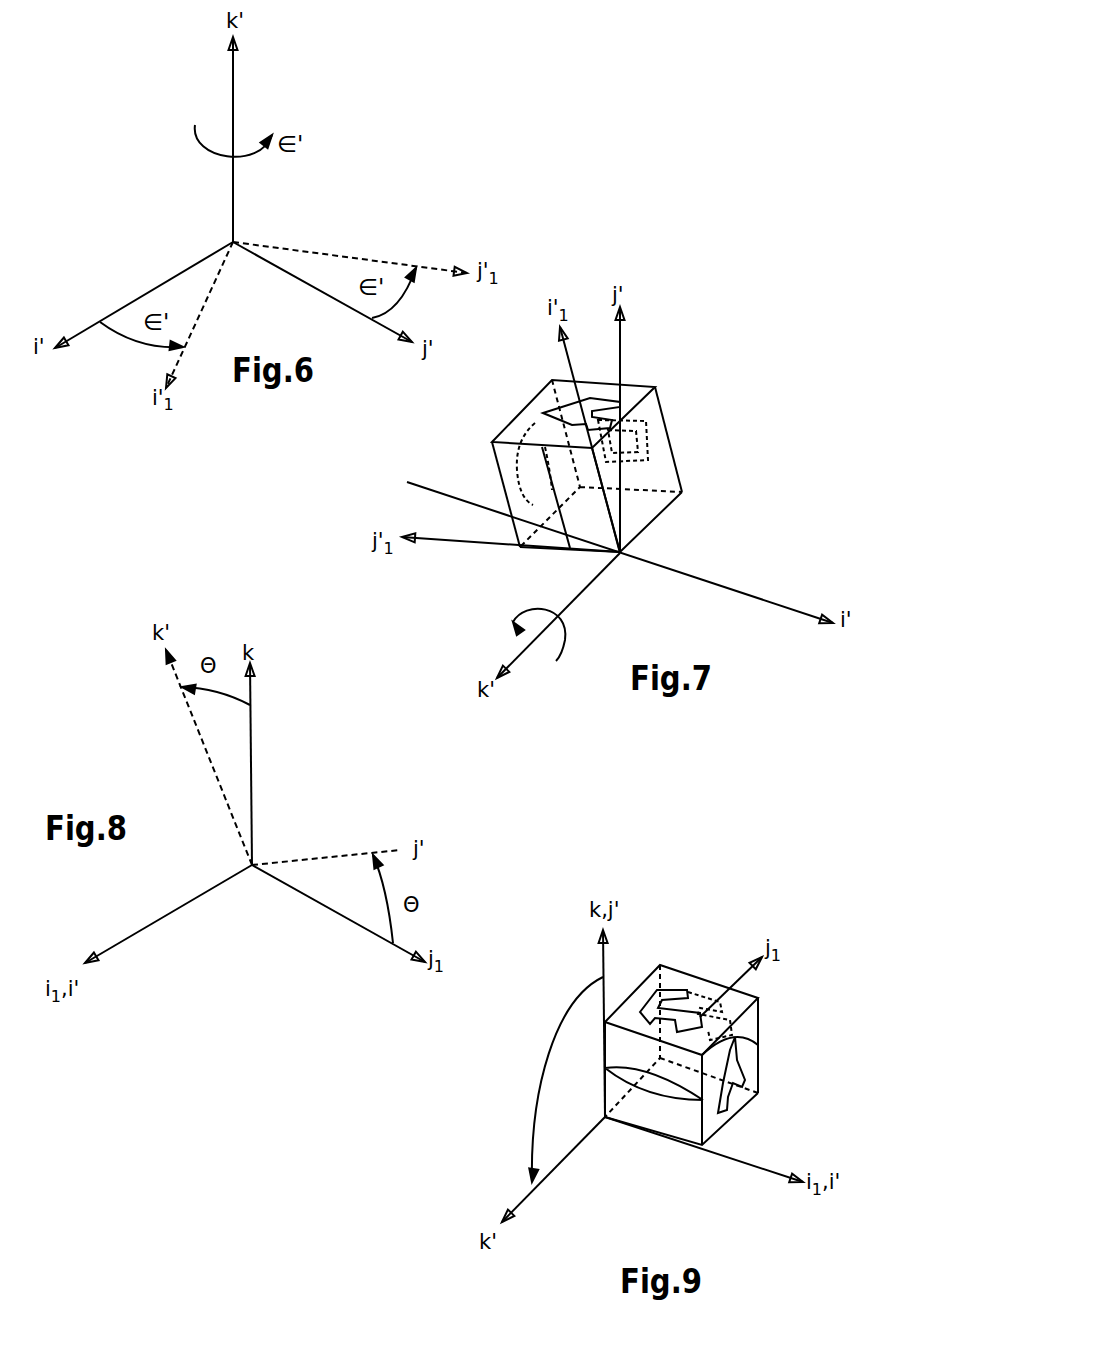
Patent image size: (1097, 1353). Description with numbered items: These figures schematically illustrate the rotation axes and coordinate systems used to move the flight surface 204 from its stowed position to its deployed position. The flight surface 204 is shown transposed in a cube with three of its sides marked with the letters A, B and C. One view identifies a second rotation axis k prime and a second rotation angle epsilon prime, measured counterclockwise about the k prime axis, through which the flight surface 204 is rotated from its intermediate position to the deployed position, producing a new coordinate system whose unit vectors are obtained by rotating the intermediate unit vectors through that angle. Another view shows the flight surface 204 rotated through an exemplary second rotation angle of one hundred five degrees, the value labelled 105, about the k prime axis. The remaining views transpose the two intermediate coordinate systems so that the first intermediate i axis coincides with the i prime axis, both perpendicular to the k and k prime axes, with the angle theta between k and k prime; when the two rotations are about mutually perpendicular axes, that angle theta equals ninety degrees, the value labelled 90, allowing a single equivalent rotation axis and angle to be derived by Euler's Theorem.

In FIG. 7, the flight surface 204 is at (627, 473).
In FIG. 9, the flight surface 204 is at (622, 1060).
In FIG. 7, the rotation angle epsilon prime about k' axis 105 is at (515, 622).
In FIG. 9, the rotation angle theta 90 is at (534, 1079).